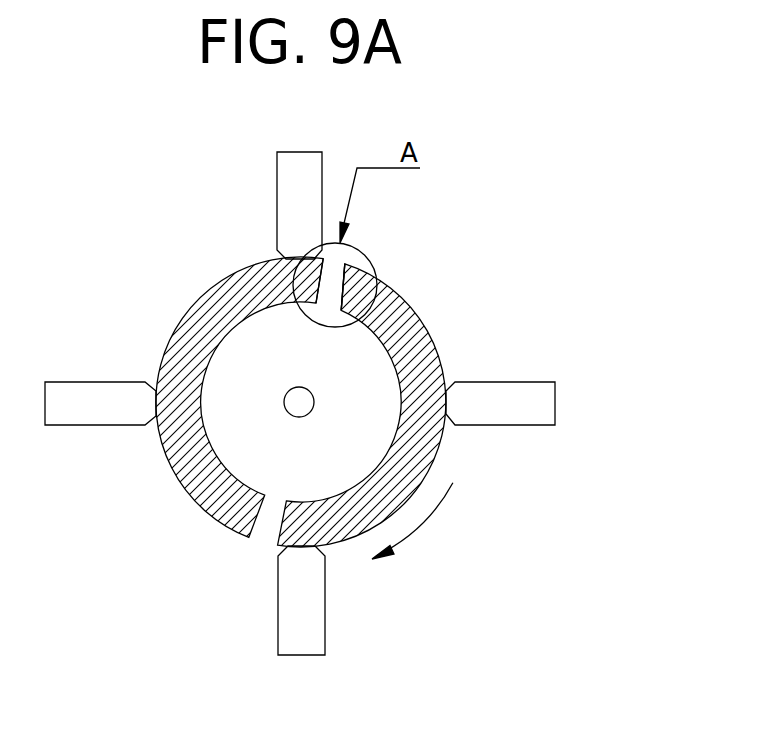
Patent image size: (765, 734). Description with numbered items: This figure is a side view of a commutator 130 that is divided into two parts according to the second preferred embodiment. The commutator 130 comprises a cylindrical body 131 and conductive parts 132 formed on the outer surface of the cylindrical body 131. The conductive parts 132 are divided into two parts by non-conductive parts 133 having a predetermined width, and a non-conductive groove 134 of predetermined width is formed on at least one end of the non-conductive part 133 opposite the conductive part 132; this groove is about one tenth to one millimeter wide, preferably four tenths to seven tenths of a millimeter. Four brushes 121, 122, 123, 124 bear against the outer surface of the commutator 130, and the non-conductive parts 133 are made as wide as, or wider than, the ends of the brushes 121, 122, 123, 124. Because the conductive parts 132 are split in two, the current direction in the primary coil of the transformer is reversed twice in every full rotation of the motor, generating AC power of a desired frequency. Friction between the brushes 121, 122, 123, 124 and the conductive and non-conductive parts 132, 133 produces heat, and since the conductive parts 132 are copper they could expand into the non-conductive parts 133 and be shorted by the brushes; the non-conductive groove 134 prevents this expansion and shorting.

The brush 121 is at (283, 174).
The brush 122 is at (60, 390).
The brush 123 is at (290, 623).
The brush 124 is at (543, 402).
The commutator 130 is at (373, 370).
The cylindrical body 131 is at (238, 440).
The conductive part 132 is at (200, 325).
The non-conductive part 133 is at (335, 278).
The non-conductive groove 134 is at (348, 266).